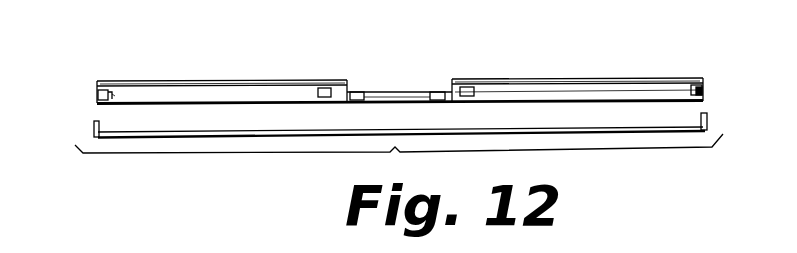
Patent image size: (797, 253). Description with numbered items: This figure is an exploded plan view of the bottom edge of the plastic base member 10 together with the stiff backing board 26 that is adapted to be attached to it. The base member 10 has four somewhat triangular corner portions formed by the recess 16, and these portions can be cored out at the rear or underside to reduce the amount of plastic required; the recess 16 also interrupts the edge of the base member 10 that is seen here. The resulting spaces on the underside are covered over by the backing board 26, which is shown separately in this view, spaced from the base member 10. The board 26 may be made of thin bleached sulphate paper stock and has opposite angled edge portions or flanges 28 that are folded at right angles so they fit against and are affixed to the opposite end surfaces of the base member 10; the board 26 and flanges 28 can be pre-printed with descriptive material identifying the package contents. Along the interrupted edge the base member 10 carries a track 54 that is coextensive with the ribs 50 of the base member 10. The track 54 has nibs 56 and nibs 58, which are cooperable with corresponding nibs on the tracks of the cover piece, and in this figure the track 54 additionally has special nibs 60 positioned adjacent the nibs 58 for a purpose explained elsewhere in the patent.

The base member 10 is at (155, 66).
The recess 16 is at (403, 88).
The backing board 26 is at (603, 131).
The flanges 28 is at (94, 124).
The ribs 50 is at (219, 87).
The tracks 54 is at (572, 93).
The nibs 56 is at (97, 96).
The nibs 58 is at (356, 92).
The special nibs 60 is at (325, 92).